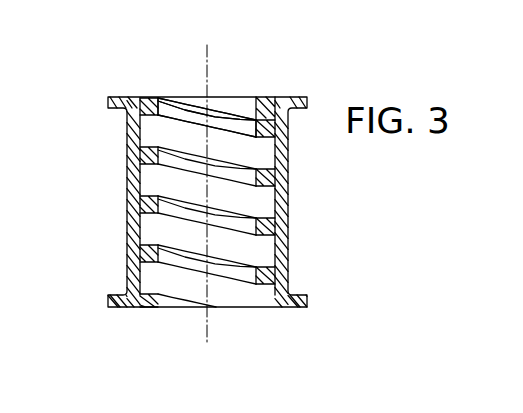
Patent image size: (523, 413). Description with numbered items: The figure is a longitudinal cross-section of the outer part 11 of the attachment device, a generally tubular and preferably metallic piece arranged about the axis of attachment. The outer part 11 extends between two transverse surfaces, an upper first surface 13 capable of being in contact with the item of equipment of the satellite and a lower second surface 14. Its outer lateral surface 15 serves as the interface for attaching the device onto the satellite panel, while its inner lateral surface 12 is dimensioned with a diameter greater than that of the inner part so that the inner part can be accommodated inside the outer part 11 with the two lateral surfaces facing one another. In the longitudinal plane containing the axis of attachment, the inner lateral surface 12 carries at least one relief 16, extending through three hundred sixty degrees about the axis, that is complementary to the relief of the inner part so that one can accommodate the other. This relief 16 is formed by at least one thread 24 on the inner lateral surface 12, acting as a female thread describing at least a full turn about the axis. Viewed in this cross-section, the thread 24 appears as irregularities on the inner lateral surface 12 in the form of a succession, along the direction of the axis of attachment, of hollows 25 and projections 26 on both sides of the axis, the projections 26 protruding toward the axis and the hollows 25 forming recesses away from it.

The outer part 11 is at (293, 97).
The inner lateral surface 12 is at (272, 300).
The first surface 13 is at (131, 97).
The second surface 14 is at (133, 308).
The outer lateral surface 15 is at (289, 226).
The relief 16 is at (233, 127).
The thread 24 is at (181, 104).
The hollows 25 is at (153, 132).
The projections 26 is at (266, 190).